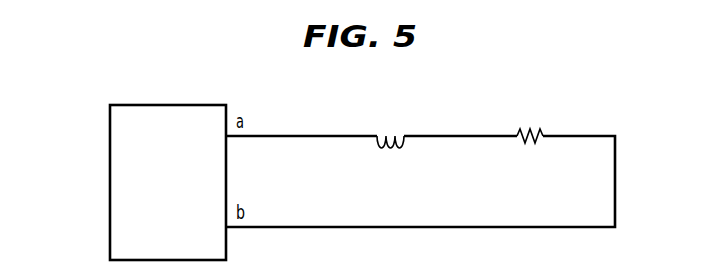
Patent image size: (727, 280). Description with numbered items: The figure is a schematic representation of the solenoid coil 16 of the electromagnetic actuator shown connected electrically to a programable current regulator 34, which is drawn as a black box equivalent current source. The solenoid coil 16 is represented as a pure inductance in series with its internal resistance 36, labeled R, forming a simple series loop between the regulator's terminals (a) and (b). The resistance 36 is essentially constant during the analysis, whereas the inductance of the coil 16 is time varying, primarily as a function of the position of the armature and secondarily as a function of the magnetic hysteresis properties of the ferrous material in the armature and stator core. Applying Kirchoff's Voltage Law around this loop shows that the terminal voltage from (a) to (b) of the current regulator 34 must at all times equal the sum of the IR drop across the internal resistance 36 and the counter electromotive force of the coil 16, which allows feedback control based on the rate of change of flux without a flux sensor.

The programable current regulator 34 is at (110, 160).
The solenoid coil 16 is at (376, 149).
The internal resistance 36 is at (537, 133).